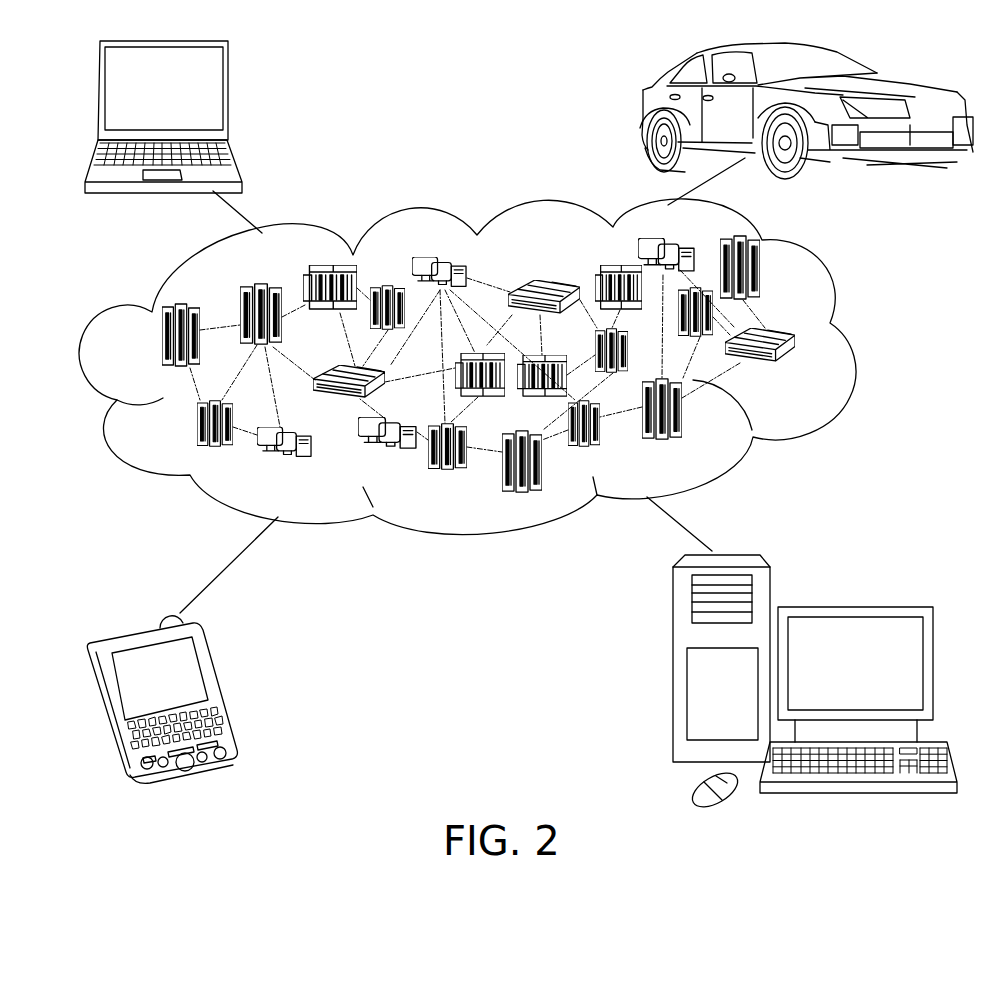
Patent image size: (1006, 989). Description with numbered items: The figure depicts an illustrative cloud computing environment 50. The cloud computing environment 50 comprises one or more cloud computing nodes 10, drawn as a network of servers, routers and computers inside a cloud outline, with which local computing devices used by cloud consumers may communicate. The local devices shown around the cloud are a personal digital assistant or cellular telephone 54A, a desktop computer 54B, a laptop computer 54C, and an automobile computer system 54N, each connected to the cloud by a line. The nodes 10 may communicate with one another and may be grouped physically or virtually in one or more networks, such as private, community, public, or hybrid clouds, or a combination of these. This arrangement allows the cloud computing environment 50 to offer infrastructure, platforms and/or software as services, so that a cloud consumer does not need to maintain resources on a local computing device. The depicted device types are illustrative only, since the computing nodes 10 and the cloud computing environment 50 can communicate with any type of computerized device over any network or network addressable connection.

The cloud computing node 10 is at (798, 372).
The cloud computing environment 50 is at (858, 340).
The personal digital assistant or cellular telephone 54A is at (217, 688).
The desktop computer 54B is at (853, 606).
The laptop computer 54C is at (228, 97).
The automobile computer system 54N is at (640, 112).